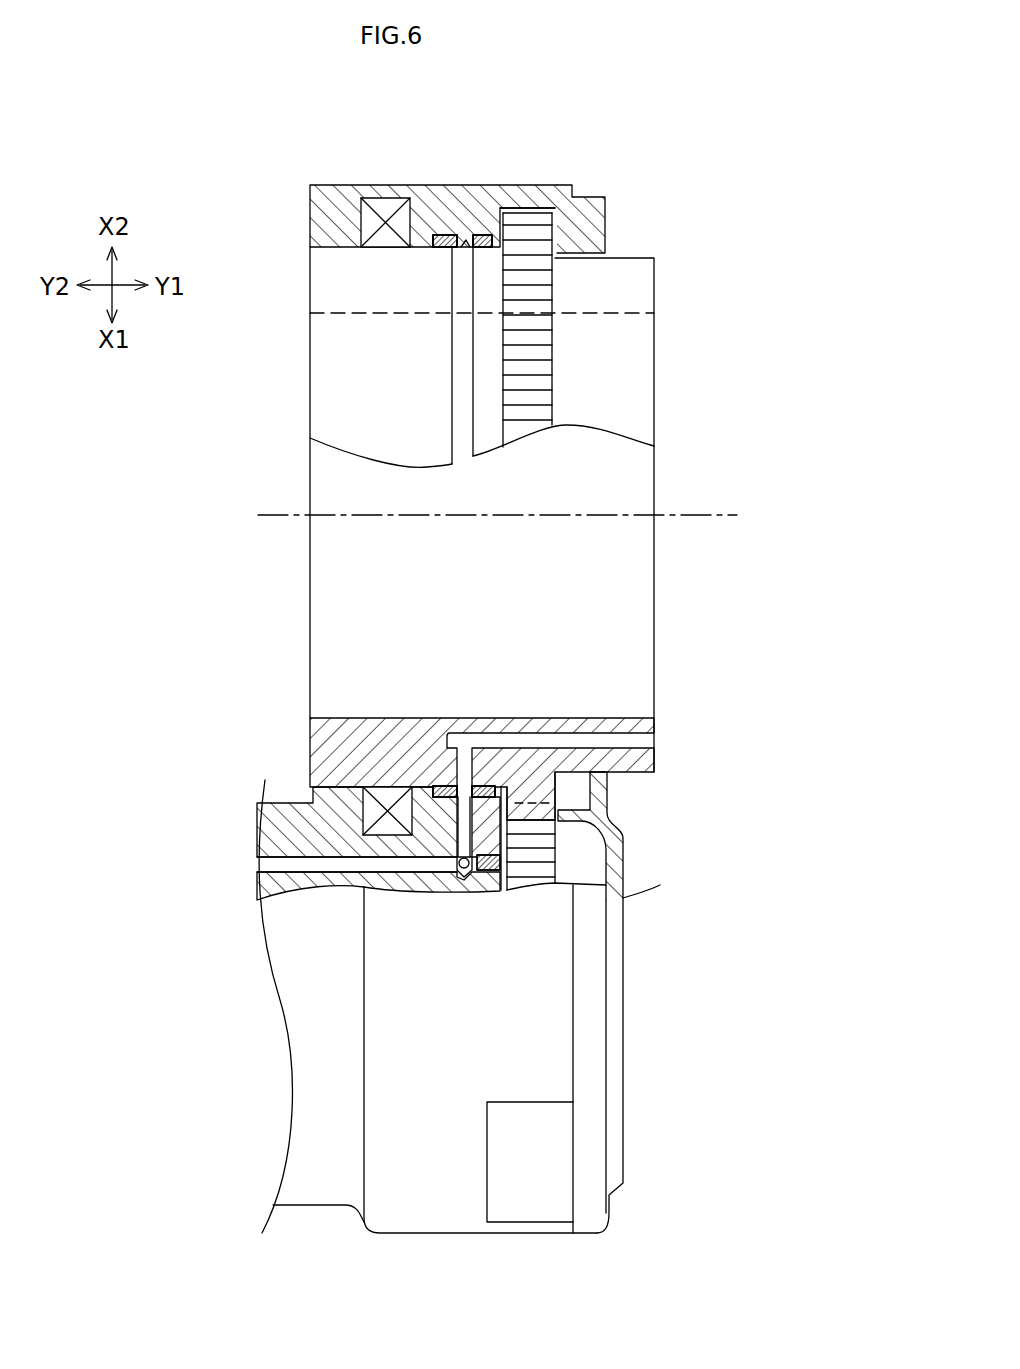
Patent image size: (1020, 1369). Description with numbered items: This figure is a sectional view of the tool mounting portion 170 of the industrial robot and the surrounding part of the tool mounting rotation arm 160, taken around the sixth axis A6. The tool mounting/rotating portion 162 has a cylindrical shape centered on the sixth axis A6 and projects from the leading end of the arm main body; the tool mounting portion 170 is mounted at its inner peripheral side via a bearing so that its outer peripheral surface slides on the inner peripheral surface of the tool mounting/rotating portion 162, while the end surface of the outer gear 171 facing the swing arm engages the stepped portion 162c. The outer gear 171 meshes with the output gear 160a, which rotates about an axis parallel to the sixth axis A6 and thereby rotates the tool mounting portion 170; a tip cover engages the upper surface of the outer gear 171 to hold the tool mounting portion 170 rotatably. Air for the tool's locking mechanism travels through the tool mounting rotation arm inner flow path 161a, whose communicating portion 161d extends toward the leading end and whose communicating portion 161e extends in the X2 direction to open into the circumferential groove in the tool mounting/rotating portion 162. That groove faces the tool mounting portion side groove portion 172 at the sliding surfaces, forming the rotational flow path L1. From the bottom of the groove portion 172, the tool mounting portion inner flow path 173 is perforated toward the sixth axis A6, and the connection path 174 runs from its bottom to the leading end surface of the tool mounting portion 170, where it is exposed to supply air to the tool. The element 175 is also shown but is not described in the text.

The tool mounting rotation arm 160 is at (645, 1040).
The output gear 160a is at (537, 857).
The tool mounting rotation arm inner flow path 161a is at (264, 849).
The communicating portion 161d is at (268, 866).
The communicating portion 161e is at (463, 833).
The tool mounting/rotating portion 162 is at (318, 186).
The stepped portion 162c is at (522, 218).
The tool mounting portion 170 is at (657, 413).
The outer gear 171 is at (507, 223).
The tool mounting portion side groove portion 172 is at (454, 398).
The tool mounting portion inner flow path 173 is at (463, 763).
The connection path 174 is at (643, 743).
The end plate 175 is at (367, 717).
The sixth axis A6 is at (712, 515).
The rotational flow path L1 is at (468, 238).